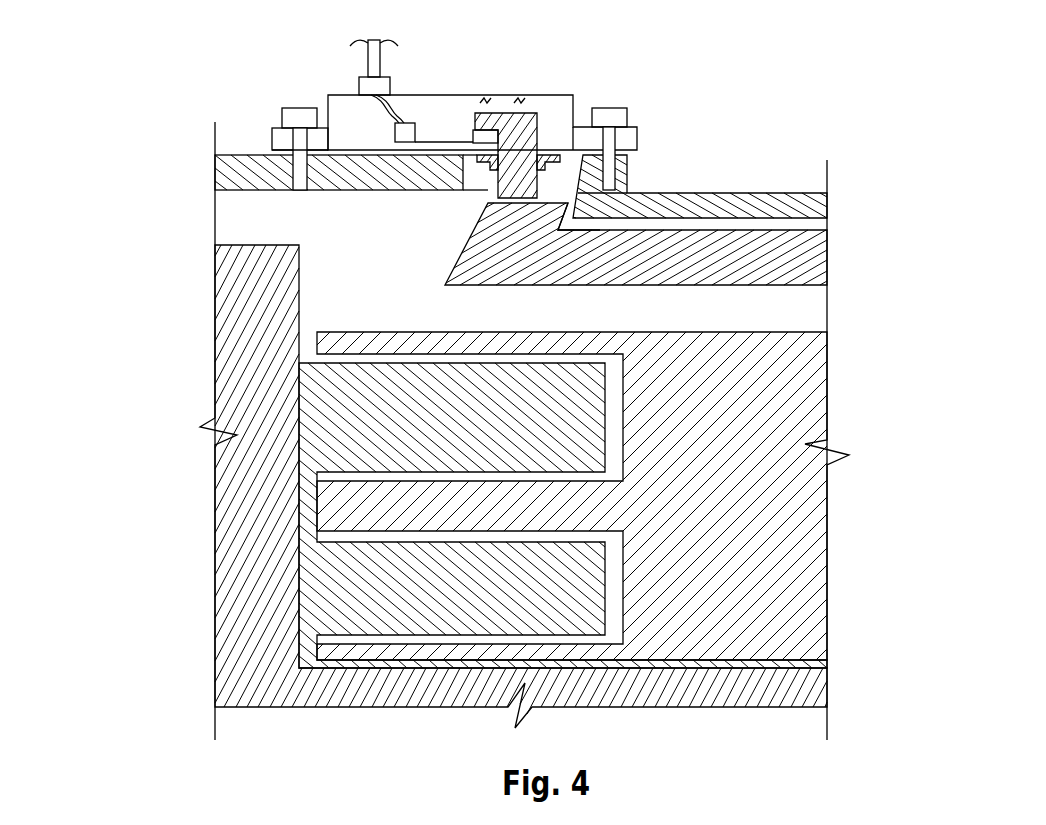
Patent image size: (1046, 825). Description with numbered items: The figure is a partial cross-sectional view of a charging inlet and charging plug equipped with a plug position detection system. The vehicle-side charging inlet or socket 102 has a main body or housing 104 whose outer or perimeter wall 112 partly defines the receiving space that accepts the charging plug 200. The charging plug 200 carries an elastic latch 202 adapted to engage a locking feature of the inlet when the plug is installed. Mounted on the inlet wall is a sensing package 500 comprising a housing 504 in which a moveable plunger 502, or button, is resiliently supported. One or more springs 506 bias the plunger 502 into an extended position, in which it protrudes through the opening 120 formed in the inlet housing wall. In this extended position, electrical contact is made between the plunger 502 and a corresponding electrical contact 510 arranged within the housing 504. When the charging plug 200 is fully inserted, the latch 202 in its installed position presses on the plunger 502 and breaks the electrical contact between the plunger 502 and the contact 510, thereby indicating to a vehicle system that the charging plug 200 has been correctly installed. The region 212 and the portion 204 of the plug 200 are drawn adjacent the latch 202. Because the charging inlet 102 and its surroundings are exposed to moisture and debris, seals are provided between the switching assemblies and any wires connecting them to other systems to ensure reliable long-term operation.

The sensing package 500 is at (393, 129).
The housing 504 is at (343, 107).
The electrical contact 510 is at (472, 130).
The springs 506 is at (518, 103).
The main body or housing 104 is at (435, 421).
The outer or perimeter wall 112 is at (253, 177).
The charging inlet or socket 102 is at (248, 540).
The opening 120 is at (478, 173).
The plunger 502 is at (497, 190).
The recess 212 is at (512, 240).
The elastic latch 202 is at (680, 223).
The charging plug 200 is at (630, 500).
The rotor disk 204 is at (805, 520).